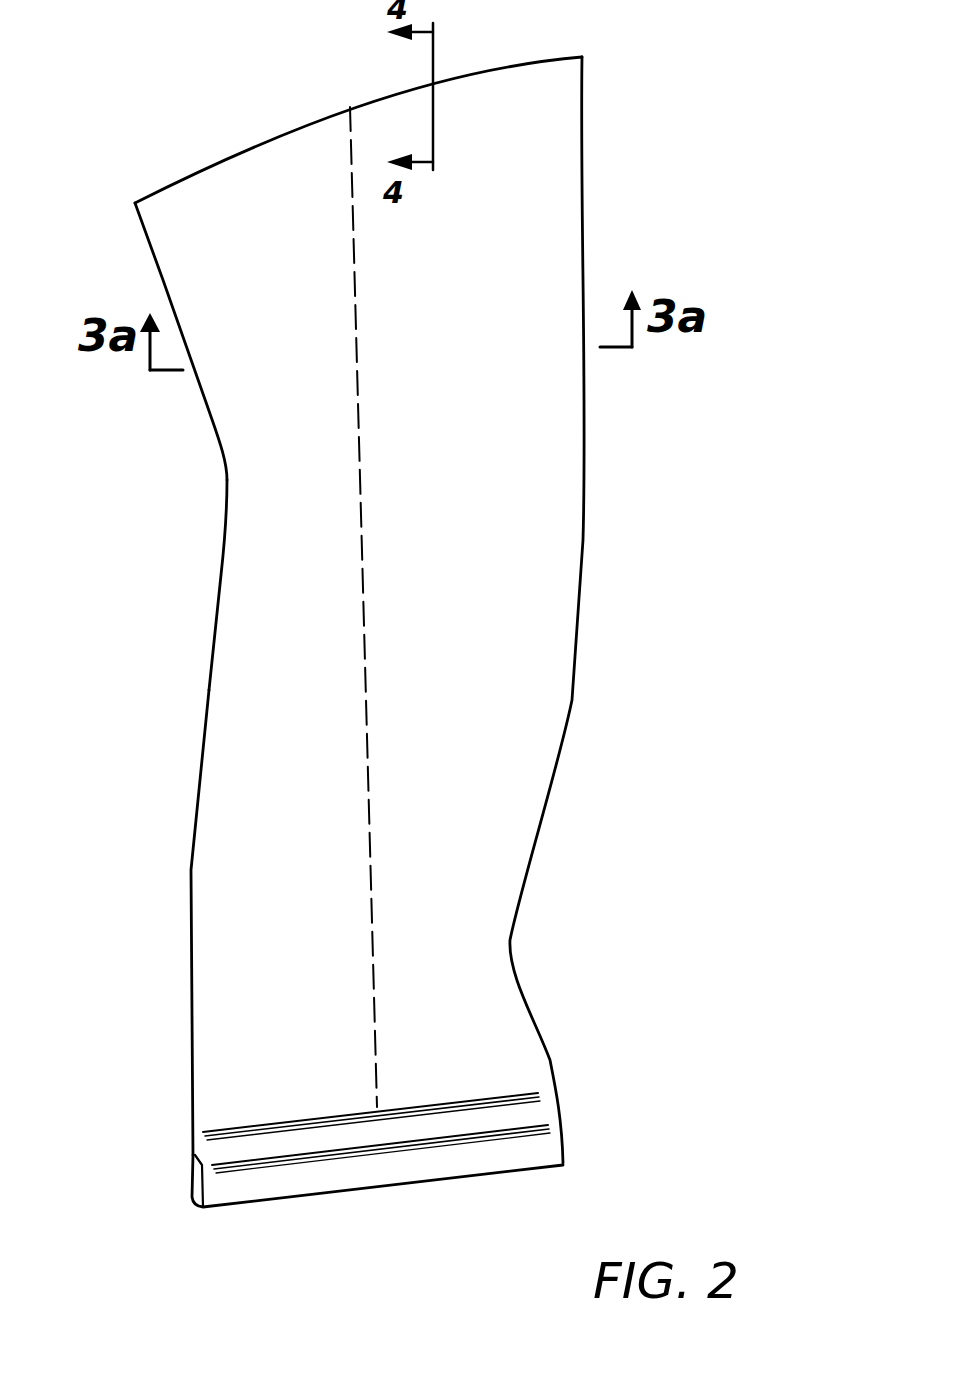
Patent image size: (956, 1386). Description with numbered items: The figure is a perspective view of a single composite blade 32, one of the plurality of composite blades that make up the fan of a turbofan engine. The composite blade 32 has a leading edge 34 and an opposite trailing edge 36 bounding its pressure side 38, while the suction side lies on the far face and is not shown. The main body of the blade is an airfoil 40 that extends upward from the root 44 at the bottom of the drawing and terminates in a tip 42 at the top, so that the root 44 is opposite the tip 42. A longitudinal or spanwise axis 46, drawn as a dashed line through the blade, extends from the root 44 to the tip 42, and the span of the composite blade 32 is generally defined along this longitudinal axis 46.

The composite blade 32 is at (452, 603).
The leading edge 34 is at (587, 465).
The trailing edge 36 is at (213, 422).
The pressure side 38 is at (227, 807).
The airfoil 40 is at (212, 655).
The tip 42 is at (543, 57).
The root 44 is at (563, 1145).
The longitudinal axis 46 is at (360, 540).